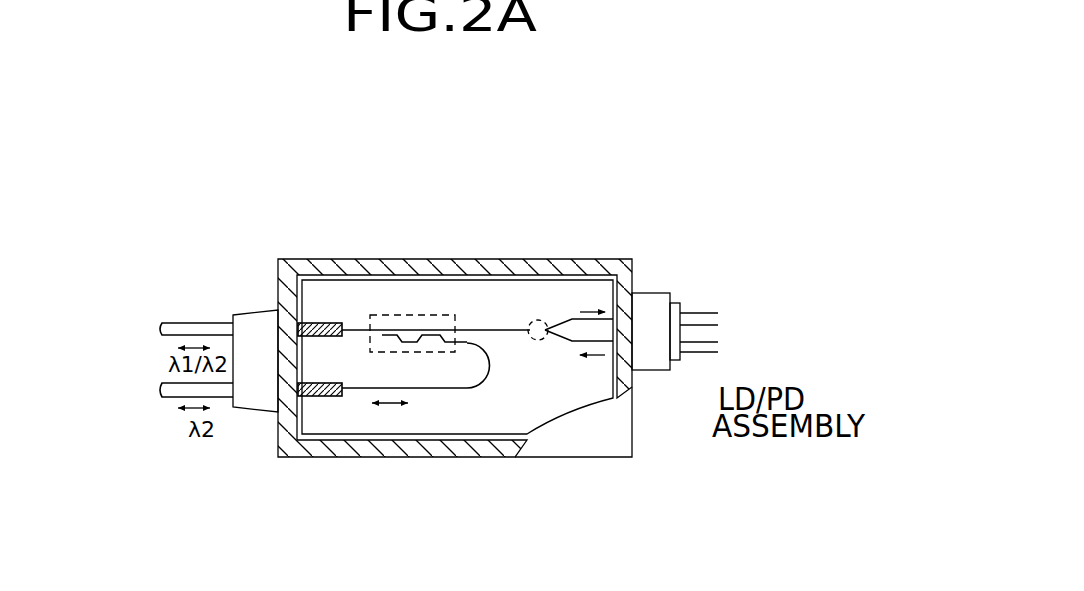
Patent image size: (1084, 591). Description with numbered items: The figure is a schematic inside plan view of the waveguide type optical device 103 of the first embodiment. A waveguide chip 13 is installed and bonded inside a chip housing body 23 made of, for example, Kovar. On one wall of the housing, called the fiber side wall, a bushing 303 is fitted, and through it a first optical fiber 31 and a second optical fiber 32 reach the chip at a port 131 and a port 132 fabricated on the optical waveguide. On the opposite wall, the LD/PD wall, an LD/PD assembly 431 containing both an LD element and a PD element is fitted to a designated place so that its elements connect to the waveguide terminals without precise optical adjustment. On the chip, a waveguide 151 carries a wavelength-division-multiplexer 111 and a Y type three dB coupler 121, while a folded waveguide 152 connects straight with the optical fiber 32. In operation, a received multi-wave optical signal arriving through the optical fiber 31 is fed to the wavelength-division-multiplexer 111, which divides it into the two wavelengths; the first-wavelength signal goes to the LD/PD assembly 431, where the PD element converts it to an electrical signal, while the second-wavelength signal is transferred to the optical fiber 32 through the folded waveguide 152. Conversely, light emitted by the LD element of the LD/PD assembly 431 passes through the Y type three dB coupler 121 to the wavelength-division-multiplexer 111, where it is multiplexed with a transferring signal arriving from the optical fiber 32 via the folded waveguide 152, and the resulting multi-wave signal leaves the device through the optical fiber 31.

The waveguide type optical device 103 is at (606, 108).
The chip housing body 23 is at (310, 259).
The waveguide chip 13 is at (415, 297).
The port 131 is at (323, 323).
The port 132 is at (328, 397).
The waveguide 151 is at (498, 330).
The folded waveguide 152 is at (475, 389).
The wavelength-division-multiplexer 111 is at (425, 353).
The Y type 3 dB coupler 121 is at (538, 345).
The bushing 303 is at (243, 312).
The optical fiber 31 is at (162, 323).
The optical fiber 32 is at (170, 398).
The LD/PD assembly 431 is at (651, 371).